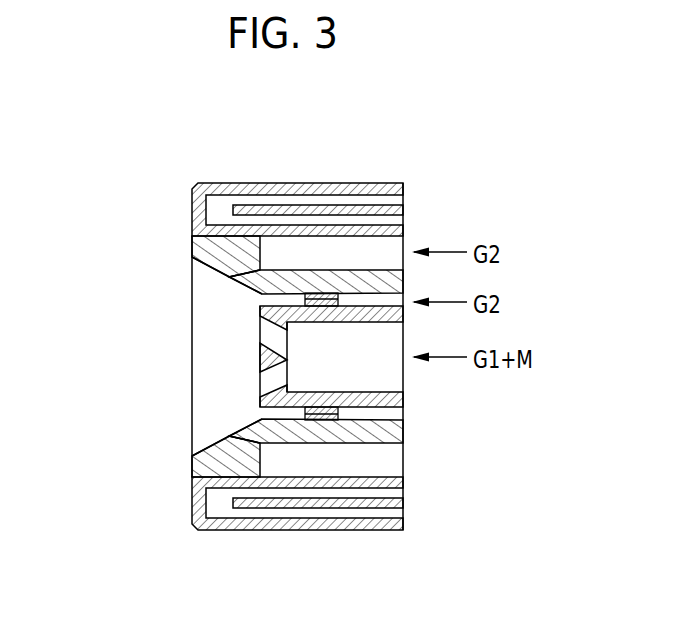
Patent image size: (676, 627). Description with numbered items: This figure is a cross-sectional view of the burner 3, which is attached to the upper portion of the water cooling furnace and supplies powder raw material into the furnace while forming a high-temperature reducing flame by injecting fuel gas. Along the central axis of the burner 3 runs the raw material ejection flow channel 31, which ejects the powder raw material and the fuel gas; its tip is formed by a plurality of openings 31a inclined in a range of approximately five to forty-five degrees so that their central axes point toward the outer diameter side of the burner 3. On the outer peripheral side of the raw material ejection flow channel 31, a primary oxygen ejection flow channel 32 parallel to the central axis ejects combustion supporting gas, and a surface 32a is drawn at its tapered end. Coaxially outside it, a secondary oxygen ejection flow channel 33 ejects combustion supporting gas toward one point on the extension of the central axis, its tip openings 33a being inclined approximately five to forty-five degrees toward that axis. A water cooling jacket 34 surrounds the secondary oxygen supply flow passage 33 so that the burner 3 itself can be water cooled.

The burner 3 is at (140, 160).
The raw material ejection flow channel 31 is at (375, 392).
The openings 31a is at (258, 319).
The primary oxygen ejection flow channel 32 is at (362, 292).
The inclined surface of ring member 32a is at (250, 300).
The secondary oxygen ejection flow channel 33 is at (312, 238).
The openings 33a is at (232, 278).
The water cooling jacket 34 is at (264, 194).